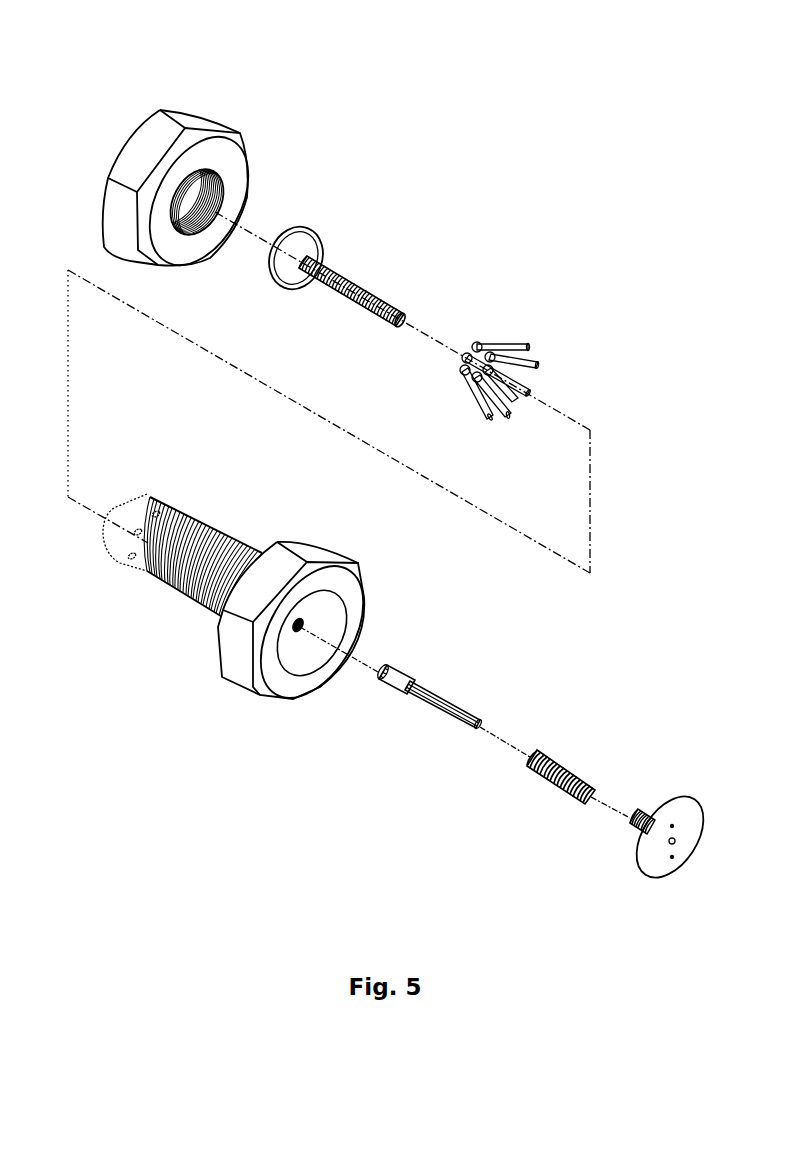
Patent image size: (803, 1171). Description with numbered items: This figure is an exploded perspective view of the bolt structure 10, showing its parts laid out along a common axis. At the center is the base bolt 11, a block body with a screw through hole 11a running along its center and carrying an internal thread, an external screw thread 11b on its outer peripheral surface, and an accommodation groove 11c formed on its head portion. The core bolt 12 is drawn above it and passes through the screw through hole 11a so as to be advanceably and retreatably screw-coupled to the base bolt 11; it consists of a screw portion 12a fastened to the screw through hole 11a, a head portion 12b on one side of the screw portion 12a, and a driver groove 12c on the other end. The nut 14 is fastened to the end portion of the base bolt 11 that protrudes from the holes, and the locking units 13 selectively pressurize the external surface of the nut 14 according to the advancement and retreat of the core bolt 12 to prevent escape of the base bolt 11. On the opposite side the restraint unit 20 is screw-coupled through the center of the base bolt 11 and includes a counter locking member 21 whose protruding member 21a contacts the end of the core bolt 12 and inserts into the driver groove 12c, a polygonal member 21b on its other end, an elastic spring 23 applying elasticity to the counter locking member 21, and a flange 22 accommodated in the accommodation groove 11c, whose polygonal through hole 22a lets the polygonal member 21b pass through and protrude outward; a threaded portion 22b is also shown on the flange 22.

The bolt structure 10 is at (121, 88).
The nut 14 is at (200, 118).
The core bolt 12 is at (428, 172).
The screw portion 12a is at (340, 270).
The head portion 12b is at (292, 228).
The driver groove 12c is at (402, 307).
The locking units 13 is at (522, 342).
The base bolt 11 is at (309, 550).
The screw through hole 11a is at (304, 623).
The external screw thread 11b is at (128, 515).
The accommodation groove 11c is at (303, 658).
The restraint unit 20 is at (547, 891).
The counter locking member 21 is at (454, 718).
The protruding member 21a is at (382, 668).
The polygonal member 21b is at (481, 727).
The elastic spring 23 is at (550, 773).
The flange 22 is at (633, 843).
The through hole 22a is at (677, 846).
The cap threaded stub 22b is at (678, 826).